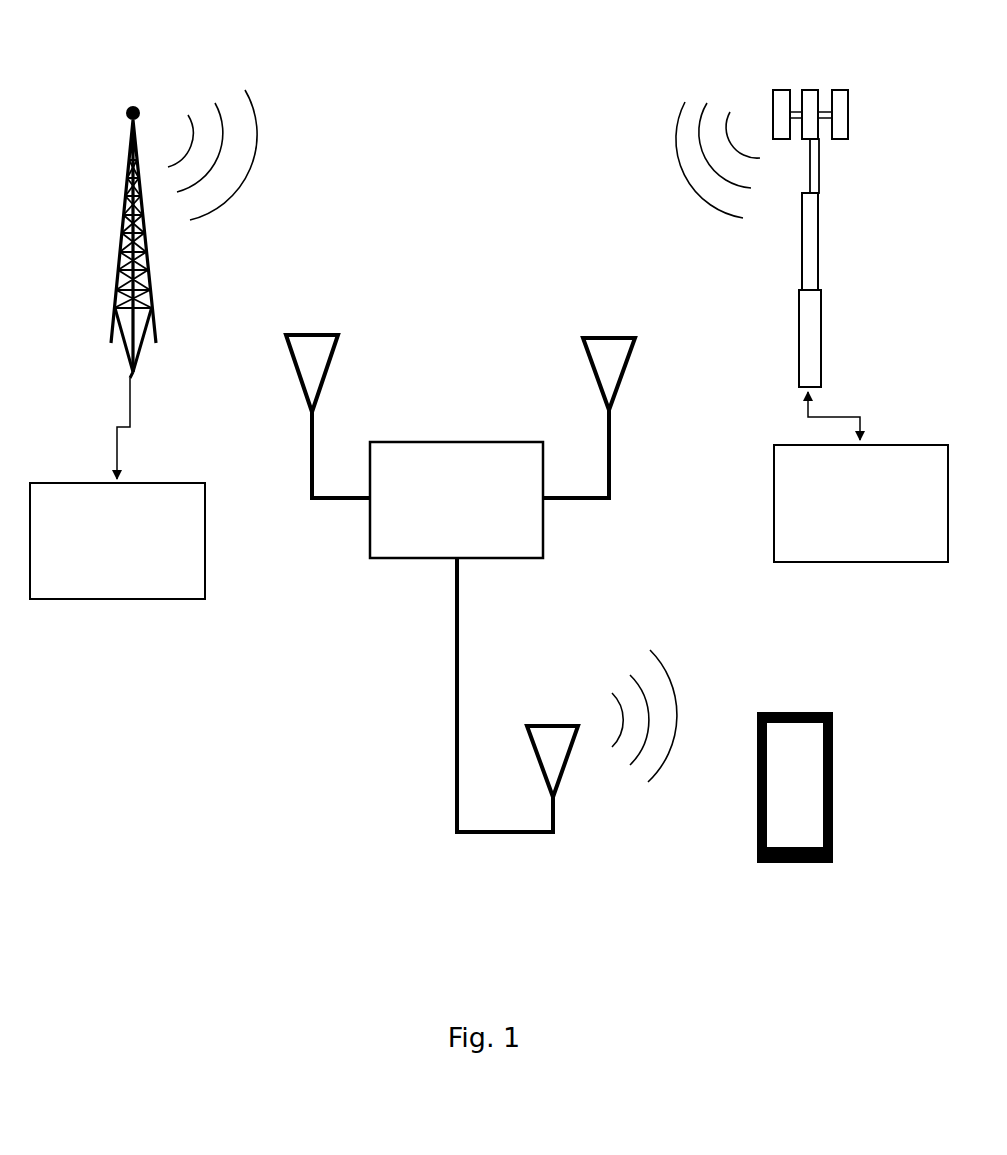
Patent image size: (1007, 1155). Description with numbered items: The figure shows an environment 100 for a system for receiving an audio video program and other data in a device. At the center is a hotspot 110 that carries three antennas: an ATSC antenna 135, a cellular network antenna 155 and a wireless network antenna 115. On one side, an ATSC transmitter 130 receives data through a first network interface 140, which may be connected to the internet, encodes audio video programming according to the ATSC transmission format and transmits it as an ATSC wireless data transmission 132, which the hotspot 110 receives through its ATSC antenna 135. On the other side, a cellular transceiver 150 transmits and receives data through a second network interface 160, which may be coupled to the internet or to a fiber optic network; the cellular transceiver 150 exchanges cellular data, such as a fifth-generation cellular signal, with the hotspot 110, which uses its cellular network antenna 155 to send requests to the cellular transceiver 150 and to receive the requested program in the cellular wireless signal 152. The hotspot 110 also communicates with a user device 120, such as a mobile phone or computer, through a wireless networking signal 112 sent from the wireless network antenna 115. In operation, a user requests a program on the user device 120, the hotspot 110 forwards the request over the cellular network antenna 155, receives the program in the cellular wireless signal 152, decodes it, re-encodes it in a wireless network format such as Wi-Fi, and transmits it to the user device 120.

The environment 100 is at (472, 58).
The hotspot 110 is at (456, 500).
The wireless networking signal 112 is at (677, 660).
The wireless network antenna 115 is at (528, 713).
The user device 120 is at (773, 868).
The ATSC transmitter 130 is at (132, 103).
The ATSC wireless data transmission 132 is at (270, 135).
The ATSC antenna 135 is at (312, 328).
The first network interface 140 is at (117, 488).
The cellular transceiver 150 is at (832, 75).
The cellular wireless signal 152 is at (660, 151).
The cellular network antenna 155 is at (625, 327).
The second network interface 160 is at (861, 477).